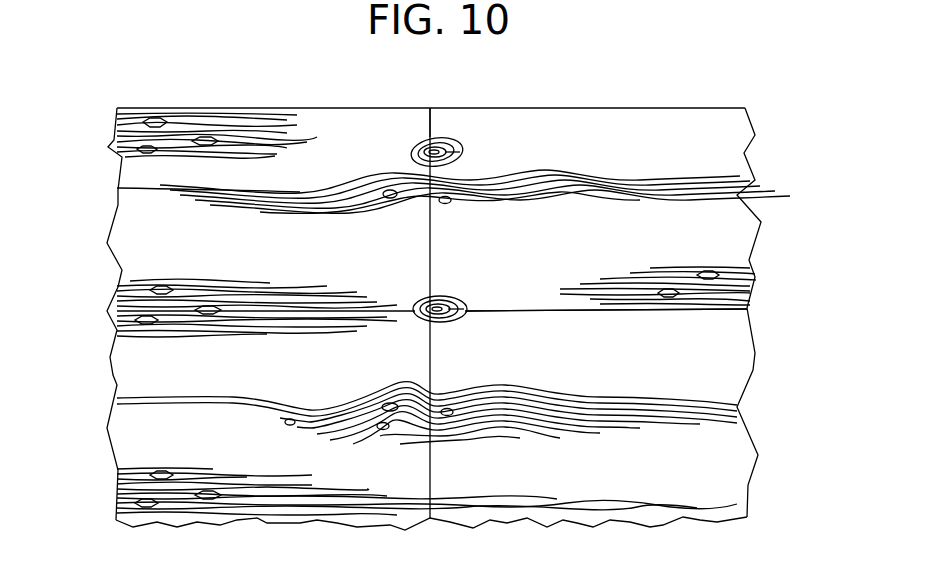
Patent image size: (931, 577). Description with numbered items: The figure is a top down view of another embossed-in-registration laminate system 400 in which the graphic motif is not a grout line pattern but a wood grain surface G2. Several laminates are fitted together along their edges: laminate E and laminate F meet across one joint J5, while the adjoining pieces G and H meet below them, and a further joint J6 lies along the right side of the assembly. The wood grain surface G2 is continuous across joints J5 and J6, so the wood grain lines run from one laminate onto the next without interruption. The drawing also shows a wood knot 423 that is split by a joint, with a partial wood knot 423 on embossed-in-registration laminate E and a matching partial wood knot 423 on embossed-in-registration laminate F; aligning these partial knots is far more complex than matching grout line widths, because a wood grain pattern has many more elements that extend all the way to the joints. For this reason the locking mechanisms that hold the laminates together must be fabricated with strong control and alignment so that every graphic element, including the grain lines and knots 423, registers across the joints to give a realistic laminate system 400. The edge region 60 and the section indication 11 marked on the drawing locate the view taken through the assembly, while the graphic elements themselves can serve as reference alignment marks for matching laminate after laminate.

The embossed-in-registration laminate system 400 is at (212, 86).
The edge of panel / board 60 is at (115, 163).
The wood knot 423 is at (460, 143).
The joint J5 is at (429, 127).
The joint J6 is at (733, 310).
The section line 11- 11 is at (100, 232).
The embossed-in-registration laminate E is at (257, 289).
The embossed-in-registration laminate F is at (475, 227).
The board G is at (427, 420).
The board H is at (427, 486).
The wood grain surface G2 is at (657, 259).